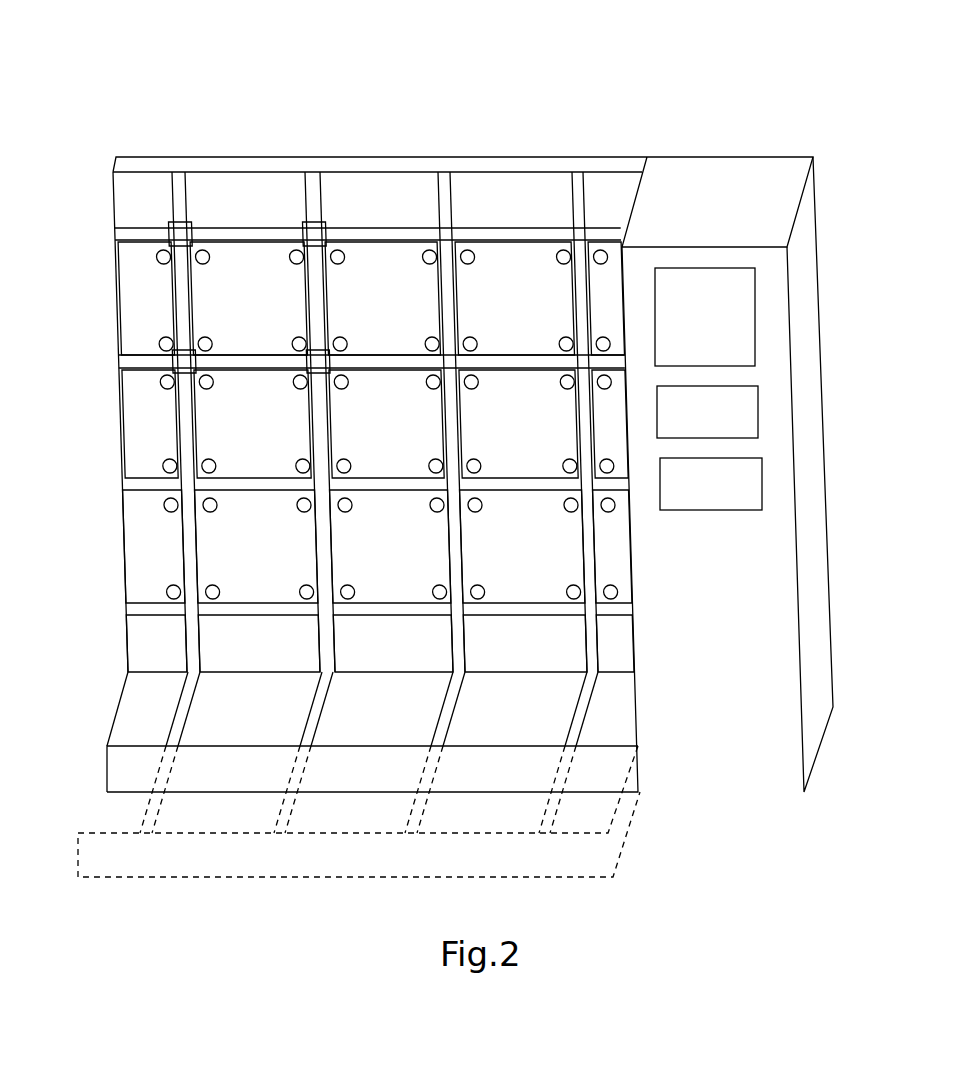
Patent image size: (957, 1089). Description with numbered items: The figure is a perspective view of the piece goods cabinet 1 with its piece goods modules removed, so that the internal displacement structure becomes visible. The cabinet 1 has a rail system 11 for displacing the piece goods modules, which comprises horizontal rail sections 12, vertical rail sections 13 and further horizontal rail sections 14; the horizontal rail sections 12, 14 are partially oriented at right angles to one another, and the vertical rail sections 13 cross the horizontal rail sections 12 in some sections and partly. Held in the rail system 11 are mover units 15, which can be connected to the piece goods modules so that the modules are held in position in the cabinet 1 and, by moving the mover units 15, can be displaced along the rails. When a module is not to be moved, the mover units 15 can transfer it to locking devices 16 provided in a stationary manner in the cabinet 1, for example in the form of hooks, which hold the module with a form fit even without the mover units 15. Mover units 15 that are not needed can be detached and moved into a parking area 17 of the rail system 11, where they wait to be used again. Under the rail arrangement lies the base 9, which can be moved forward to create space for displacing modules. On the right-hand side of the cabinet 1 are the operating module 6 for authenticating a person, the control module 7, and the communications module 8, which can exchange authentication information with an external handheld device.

The piece goods cabinet 1 is at (96, 85).
The operating module 6 is at (735, 314).
The control module 7 is at (740, 412).
The communications module 8 is at (745, 485).
The base 9 is at (127, 735).
The rail system 11 is at (512, 194).
The horizontal rail sections 12 is at (140, 367).
The vertical rail sections 13 is at (435, 190).
The horizontal rail sections 14 is at (320, 690).
The mover units 15 is at (311, 228).
The locking devices 16 is at (152, 263).
The parking area 17 is at (532, 237).